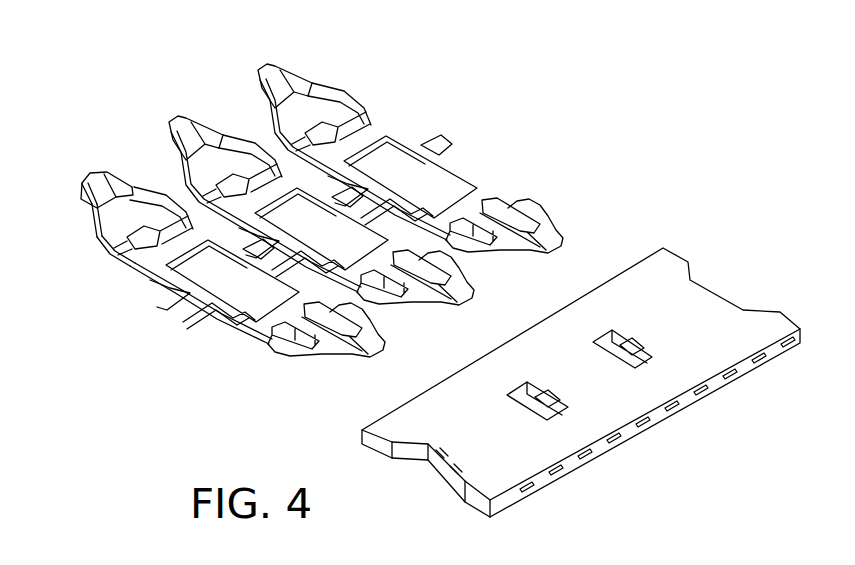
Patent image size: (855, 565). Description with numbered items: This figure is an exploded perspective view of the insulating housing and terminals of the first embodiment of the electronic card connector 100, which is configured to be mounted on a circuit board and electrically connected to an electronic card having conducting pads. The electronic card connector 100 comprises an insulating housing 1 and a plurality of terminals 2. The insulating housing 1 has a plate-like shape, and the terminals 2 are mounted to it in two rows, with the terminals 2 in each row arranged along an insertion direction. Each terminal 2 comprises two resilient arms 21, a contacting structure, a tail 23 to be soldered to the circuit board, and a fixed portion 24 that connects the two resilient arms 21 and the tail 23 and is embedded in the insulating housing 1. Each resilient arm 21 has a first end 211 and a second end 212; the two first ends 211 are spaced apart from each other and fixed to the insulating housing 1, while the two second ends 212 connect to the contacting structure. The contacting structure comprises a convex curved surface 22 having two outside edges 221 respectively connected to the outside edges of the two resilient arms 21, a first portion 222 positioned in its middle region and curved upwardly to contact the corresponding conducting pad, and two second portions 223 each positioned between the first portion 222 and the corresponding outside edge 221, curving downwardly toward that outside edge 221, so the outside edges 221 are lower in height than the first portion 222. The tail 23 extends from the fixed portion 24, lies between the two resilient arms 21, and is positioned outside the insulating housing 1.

The electronic card connector 100 is at (615, 157).
The insulating housing 1 is at (706, 303).
The terminal 2 is at (258, 64).
The resilient arm 21 is at (333, 87).
The first end 211 is at (104, 256).
The second end 212 is at (92, 236).
The convex curved surface 22 is at (280, 70).
The outside edge 221 is at (110, 170).
The first portion 222 is at (97, 173).
The second portion 223 is at (124, 178).
The tail 23 is at (324, 126).
The fixed portion 24 is at (376, 132).